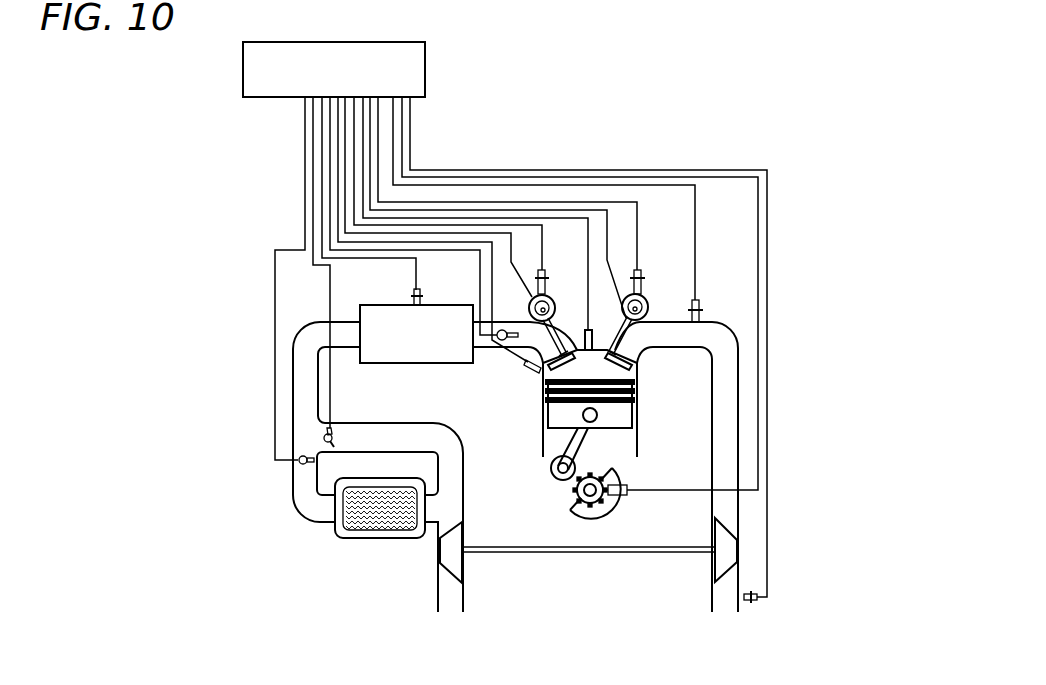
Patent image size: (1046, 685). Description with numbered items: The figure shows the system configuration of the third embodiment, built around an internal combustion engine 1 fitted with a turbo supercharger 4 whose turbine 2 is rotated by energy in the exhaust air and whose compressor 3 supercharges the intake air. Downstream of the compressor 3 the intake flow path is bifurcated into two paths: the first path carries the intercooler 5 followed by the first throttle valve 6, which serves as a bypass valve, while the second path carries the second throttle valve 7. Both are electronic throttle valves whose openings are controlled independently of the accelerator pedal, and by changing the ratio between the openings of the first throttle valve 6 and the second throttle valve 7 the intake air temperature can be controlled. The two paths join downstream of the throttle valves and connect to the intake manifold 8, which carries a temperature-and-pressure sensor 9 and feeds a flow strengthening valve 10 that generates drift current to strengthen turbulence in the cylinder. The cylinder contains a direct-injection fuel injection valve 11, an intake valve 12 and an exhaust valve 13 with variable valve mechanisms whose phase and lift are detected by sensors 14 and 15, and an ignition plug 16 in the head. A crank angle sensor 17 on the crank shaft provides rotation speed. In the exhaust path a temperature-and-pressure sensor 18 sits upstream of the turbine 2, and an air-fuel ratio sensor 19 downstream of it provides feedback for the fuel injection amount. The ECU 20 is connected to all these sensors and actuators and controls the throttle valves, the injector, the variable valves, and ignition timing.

The internal combustion engine 1 is at (543, 434).
The turbine 2 is at (709, 563).
The compressor 3 is at (440, 551).
The turbo supercharger 4 is at (582, 553).
The intercooler 5 is at (333, 538).
The first throttle valve 6 is at (314, 461).
The second throttle valve 7 is at (334, 438).
The intake manifold 8 is at (420, 365).
The temperature-and-pressure sensor 9 is at (410, 290).
The flow strengthening valve 10 is at (500, 344).
The fuel injection valve 11 is at (526, 374).
The intake valve 12 is at (552, 298).
The exhaust valve 13 is at (646, 300).
The sensor 14 is at (546, 272).
The sensor 15 is at (640, 272).
The ignition plug 16 is at (593, 330).
The crank angle sensor 17 is at (625, 496).
The temperature-and-pressure sensor 18 is at (699, 304).
The air-fuel ratio sensor 19 is at (752, 603).
The ECU 20 is at (425, 62).